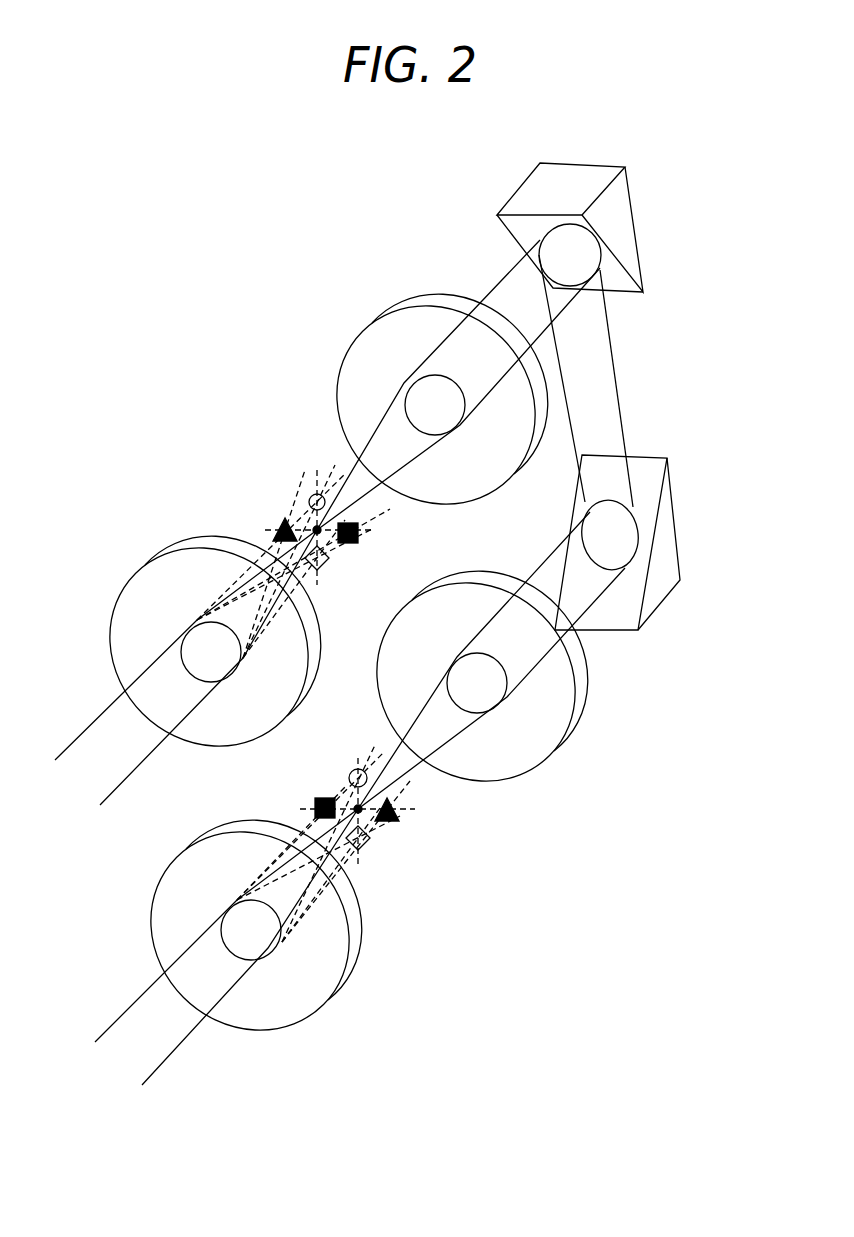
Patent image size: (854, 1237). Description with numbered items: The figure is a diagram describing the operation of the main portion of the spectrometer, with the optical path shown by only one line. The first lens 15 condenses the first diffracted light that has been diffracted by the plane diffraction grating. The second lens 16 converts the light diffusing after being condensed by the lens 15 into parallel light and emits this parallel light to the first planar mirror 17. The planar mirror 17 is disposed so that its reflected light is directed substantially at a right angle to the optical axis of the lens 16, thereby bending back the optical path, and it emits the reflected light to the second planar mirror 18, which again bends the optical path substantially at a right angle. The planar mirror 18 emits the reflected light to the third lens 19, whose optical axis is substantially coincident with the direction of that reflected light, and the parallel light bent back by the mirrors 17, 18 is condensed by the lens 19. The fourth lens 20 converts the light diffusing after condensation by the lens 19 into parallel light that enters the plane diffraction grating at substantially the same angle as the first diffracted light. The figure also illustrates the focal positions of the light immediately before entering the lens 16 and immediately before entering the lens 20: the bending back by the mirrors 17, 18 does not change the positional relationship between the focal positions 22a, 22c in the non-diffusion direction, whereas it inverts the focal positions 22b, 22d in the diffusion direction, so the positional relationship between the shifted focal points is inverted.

The first lens 15 is at (182, 888).
The second lens 16 is at (542, 719).
The first planar mirror 17 is at (665, 510).
The second planar mirror 18 is at (552, 170).
The third lens 19 is at (373, 338).
The fourth lens 20 is at (158, 582).
The focal position in the non-diffusion direction 22a is at (365, 847).
The focal position in the diffusion direction 22b is at (393, 820).
The focal position in the non-diffusion direction 22c is at (352, 773).
The focal position in the diffusion direction 22d is at (313, 800).